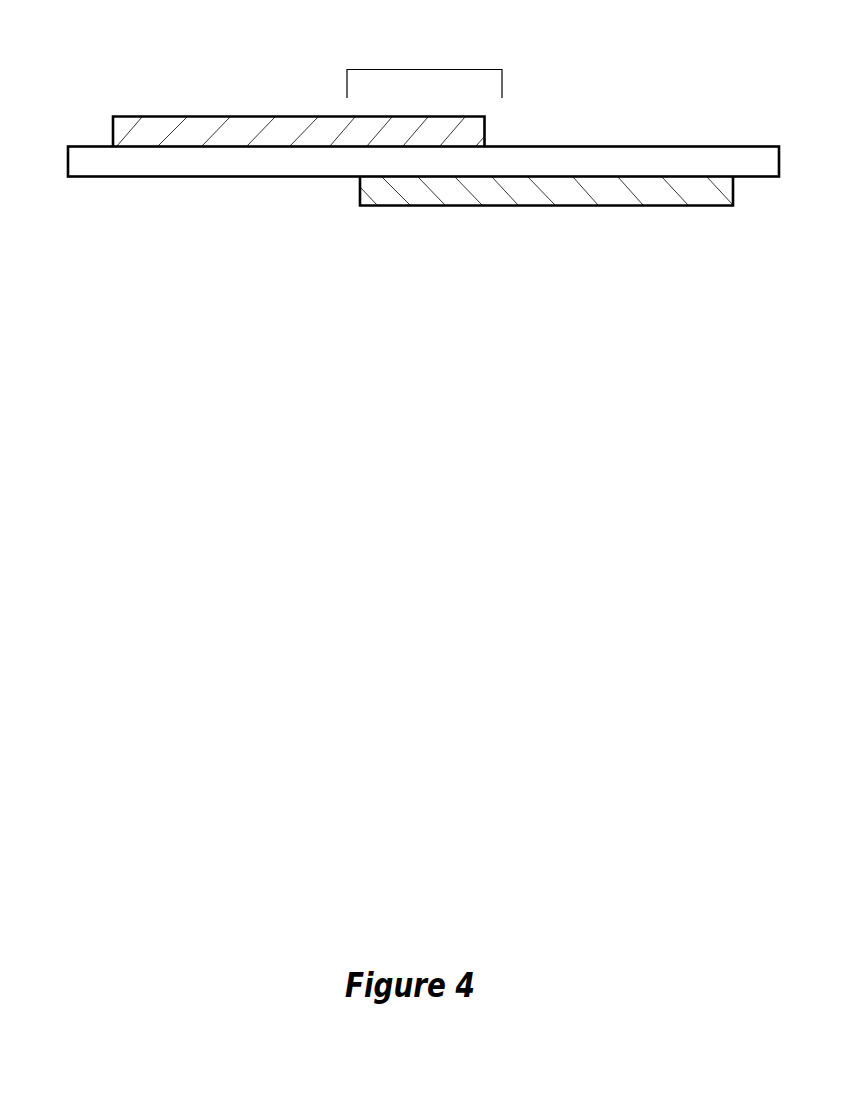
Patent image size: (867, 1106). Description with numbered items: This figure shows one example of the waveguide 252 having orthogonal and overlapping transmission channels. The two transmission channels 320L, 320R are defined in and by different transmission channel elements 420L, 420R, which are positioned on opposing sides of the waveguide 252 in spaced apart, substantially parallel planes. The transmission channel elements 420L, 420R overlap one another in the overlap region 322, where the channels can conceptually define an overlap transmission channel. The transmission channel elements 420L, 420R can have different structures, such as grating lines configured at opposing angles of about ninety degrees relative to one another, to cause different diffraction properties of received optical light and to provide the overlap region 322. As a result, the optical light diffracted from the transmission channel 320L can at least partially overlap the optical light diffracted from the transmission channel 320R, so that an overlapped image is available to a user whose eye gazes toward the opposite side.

The waveguide 252 is at (645, 147).
The transmission channel 320L is at (153, 117).
The transmission channel 320R is at (661, 205).
The transmission channel element 420L is at (120, 140).
The transmission channel element 420R is at (593, 199).
The overlap region 322 is at (427, 70).